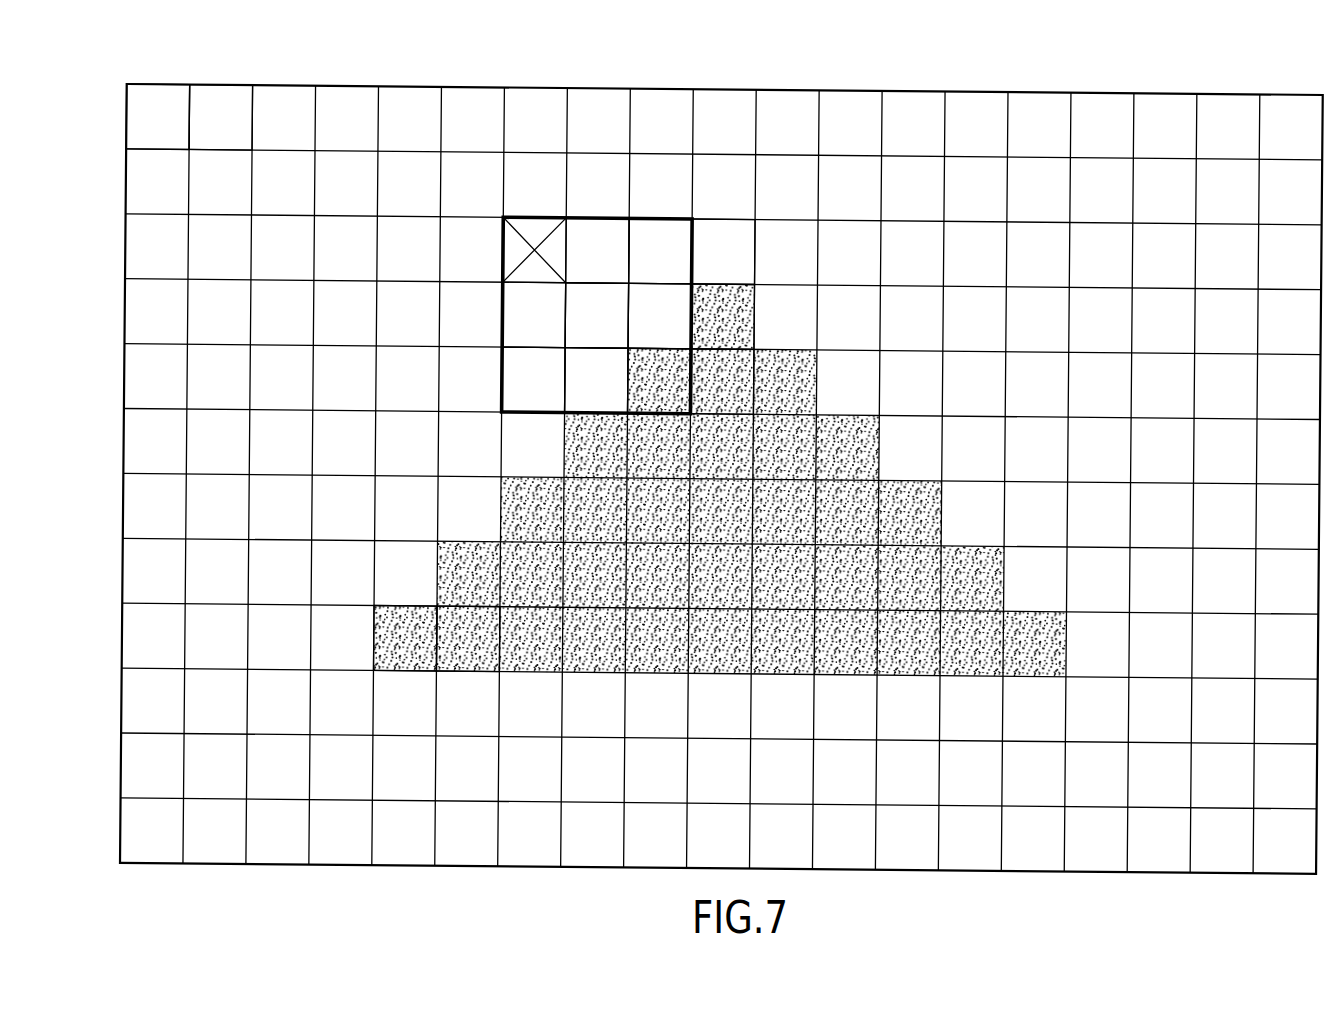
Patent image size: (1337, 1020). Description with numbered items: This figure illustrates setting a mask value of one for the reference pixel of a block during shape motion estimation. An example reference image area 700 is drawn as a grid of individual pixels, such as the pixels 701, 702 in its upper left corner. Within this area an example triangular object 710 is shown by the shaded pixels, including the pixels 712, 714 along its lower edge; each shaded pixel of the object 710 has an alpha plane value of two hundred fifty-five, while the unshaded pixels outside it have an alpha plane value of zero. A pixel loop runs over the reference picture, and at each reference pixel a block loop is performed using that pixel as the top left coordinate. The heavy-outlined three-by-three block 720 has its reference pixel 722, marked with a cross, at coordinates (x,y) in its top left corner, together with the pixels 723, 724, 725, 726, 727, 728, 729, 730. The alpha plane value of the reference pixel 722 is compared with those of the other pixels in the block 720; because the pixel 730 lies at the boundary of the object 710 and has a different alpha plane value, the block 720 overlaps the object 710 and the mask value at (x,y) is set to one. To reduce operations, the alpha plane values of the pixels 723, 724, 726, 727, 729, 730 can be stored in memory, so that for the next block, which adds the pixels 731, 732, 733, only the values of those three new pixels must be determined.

The reference image area 700 is at (826, 84).
The pixel 701 is at (177, 136).
The pixel 702 is at (240, 136).
The triangular object 710 is at (648, 681).
The pixel 712 is at (415, 672).
The pixel 714 is at (477, 672).
The 3×3 block 720 is at (587, 218).
The reference pixel 722 is at (530, 273).
The pixel 723 is at (616, 269).
The pixel 724 is at (680, 270).
The pixel 725 is at (553, 334).
The pixel 726 is at (616, 334).
The pixel 727 is at (679, 335).
The pixel 728 is at (552, 398).
The pixel 729 is at (616, 399).
The pixel 730 is at (678, 400).
The pixel 731 is at (742, 270).
The pixel 732 is at (742, 335).
The pixel 733 is at (742, 400).